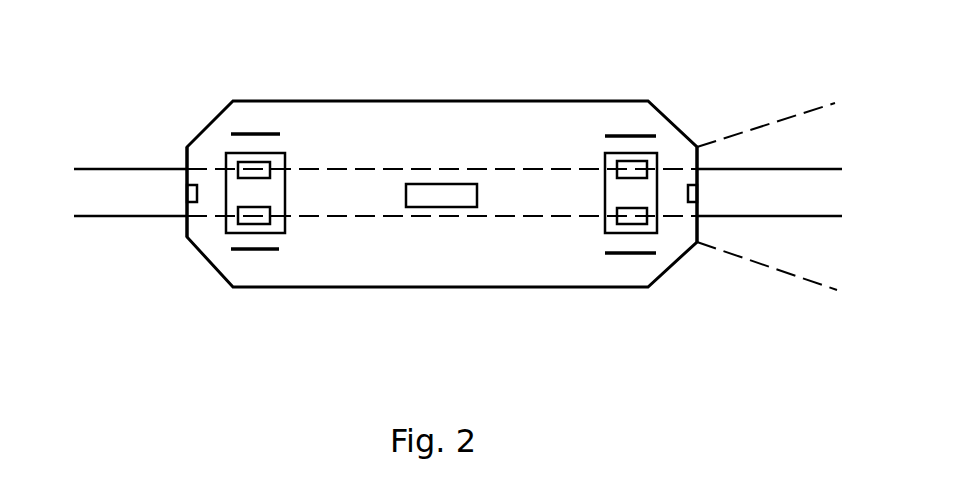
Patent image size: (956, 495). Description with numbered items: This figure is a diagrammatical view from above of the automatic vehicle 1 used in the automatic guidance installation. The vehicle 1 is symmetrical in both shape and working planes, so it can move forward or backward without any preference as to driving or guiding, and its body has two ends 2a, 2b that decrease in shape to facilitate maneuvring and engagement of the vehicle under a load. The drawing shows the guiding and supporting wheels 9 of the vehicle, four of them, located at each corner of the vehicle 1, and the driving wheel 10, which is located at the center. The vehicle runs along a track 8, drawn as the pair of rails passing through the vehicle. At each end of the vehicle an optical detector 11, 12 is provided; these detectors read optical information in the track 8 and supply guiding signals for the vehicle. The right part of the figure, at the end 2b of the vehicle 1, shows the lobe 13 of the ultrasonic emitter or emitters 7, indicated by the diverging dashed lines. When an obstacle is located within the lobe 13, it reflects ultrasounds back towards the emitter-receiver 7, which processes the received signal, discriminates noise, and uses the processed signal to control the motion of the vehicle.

The vehicle 1 is at (513, 237).
The end of the body 2a is at (188, 220).
The end of the body 2b is at (694, 245).
The ultrasonic emitter-receiver 7 is at (187, 192).
The track 8 is at (115, 203).
The guiding and supporting wheels 9 is at (260, 130).
The driving wheel 10 is at (446, 197).
The optical detector 11 is at (232, 191).
The optical detector 12 is at (612, 197).
The lobe 13 is at (782, 248).